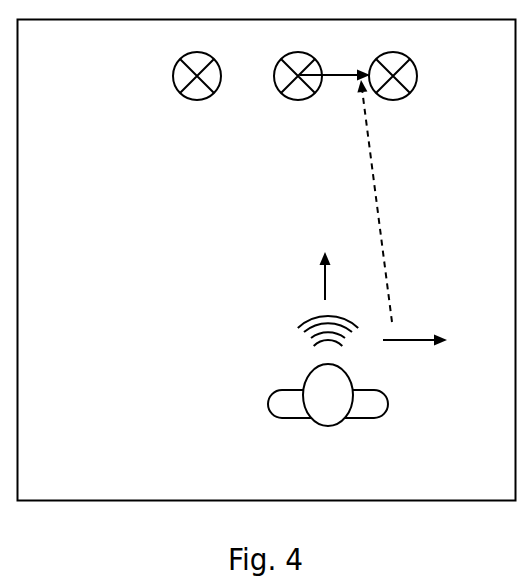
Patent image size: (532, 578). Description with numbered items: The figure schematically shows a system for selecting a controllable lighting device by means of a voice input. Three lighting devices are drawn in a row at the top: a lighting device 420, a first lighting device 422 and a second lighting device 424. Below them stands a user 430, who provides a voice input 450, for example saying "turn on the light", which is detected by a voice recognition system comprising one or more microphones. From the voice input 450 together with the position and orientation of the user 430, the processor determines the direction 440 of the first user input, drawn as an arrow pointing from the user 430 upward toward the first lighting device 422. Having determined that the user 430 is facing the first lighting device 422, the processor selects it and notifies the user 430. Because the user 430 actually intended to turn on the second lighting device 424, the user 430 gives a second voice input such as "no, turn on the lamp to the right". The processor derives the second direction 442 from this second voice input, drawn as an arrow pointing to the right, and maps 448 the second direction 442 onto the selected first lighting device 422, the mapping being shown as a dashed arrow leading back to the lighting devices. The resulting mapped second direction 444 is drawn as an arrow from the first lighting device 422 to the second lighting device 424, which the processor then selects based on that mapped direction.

The first light source 420 is at (193, 100).
The first lighting device 422 is at (297, 100).
The second lighting device 424 is at (393, 100).
The mapped second direction 444 is at (338, 78).
The mapping of the second direction 448 is at (372, 182).
The direction of the first user input 440 is at (318, 282).
The voice input 450 is at (308, 340).
The user 430 is at (290, 403).
The second direction 442 is at (408, 343).